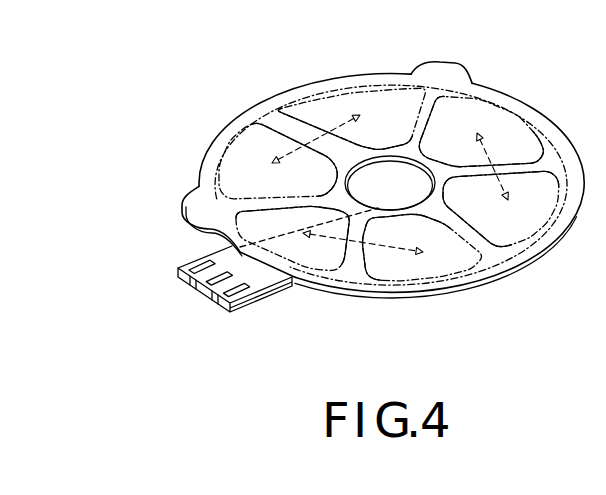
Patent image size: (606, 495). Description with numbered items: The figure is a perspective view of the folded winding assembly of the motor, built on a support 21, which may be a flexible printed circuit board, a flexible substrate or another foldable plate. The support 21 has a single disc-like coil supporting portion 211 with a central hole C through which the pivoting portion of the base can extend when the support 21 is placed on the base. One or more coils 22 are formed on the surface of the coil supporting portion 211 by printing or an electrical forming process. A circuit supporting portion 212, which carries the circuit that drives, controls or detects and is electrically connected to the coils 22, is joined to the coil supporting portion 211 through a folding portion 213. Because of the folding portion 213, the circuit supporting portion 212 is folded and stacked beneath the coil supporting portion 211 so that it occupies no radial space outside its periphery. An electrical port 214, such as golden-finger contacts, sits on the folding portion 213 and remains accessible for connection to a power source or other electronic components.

The support 21 is at (125, 96).
The coil supporting portion 211 is at (200, 180).
The circuit supporting portion 212 is at (215, 244).
The folding portion 213 is at (175, 277).
The electrical port 214 is at (239, 294).
The coil 22 is at (253, 122).
The central hole C is at (381, 170).